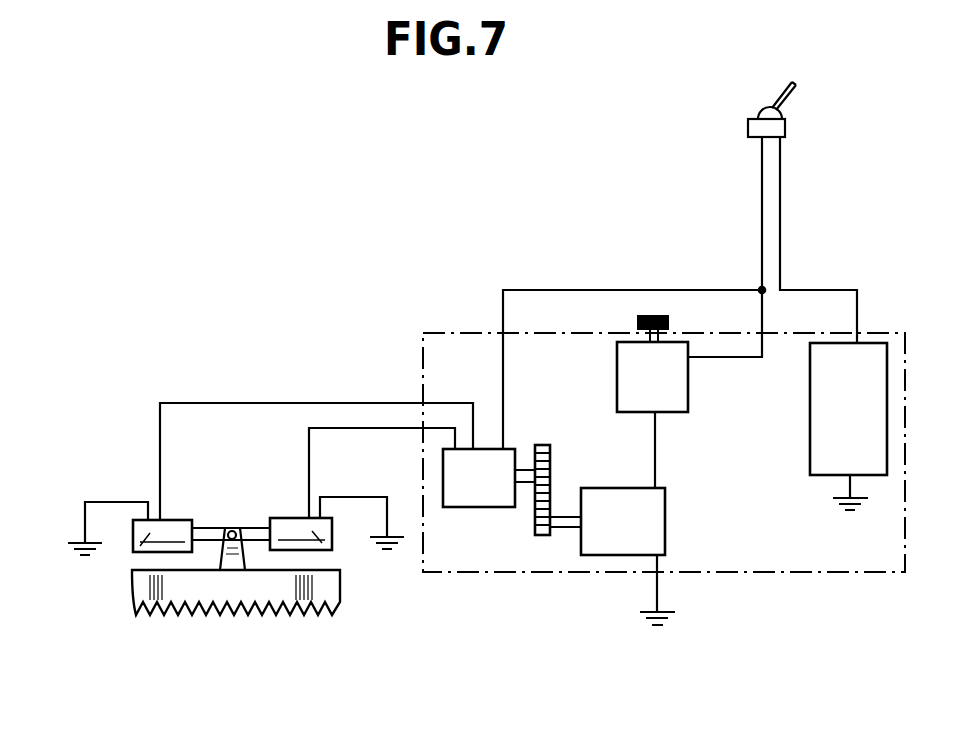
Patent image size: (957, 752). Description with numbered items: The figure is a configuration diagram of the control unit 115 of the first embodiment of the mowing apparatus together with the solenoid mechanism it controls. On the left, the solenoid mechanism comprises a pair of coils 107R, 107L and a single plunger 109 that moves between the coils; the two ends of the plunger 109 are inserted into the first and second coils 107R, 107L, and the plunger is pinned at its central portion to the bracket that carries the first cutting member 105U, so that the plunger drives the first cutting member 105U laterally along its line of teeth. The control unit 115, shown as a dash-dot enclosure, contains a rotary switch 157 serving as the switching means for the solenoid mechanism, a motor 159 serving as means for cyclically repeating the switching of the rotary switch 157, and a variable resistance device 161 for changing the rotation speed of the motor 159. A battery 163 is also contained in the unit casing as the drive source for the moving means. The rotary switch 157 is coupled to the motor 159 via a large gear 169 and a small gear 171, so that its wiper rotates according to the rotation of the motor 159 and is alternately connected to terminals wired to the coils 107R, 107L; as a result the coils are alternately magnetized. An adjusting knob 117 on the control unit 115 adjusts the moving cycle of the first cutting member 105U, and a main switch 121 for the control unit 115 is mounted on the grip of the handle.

The main switch 121 is at (772, 127).
The adjusting knob 117 is at (645, 318).
The variable resistance device 161 is at (643, 366).
The battery 163 is at (825, 395).
The rotary switch 157 is at (485, 492).
The large gear 169 is at (552, 467).
The small gear 171 is at (538, 537).
The motor 159 is at (633, 545).
The control unit 115 is at (753, 572).
The first coil 107R is at (134, 552).
The second coil 107L is at (332, 550).
The plunger 109 is at (205, 533).
The first cutting member 105U is at (253, 587).